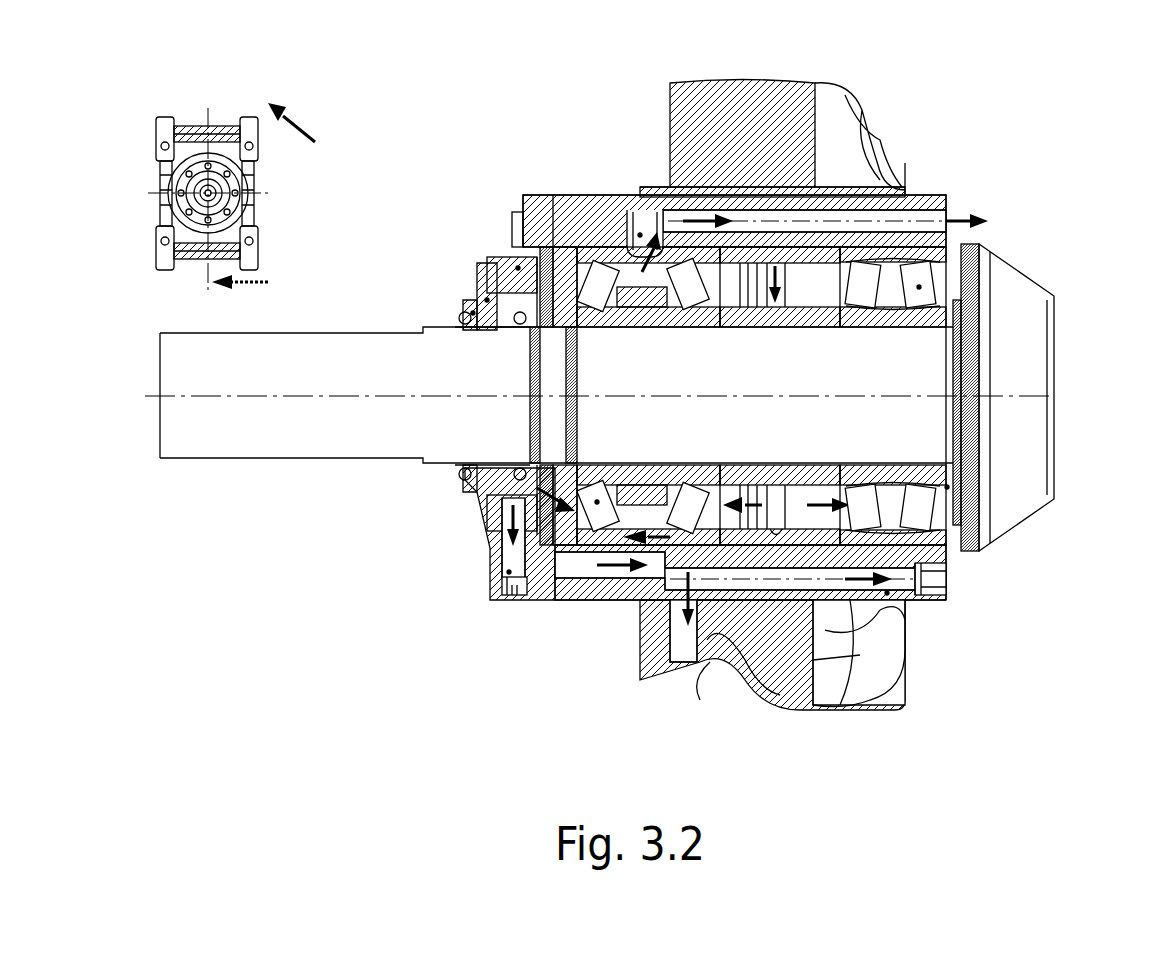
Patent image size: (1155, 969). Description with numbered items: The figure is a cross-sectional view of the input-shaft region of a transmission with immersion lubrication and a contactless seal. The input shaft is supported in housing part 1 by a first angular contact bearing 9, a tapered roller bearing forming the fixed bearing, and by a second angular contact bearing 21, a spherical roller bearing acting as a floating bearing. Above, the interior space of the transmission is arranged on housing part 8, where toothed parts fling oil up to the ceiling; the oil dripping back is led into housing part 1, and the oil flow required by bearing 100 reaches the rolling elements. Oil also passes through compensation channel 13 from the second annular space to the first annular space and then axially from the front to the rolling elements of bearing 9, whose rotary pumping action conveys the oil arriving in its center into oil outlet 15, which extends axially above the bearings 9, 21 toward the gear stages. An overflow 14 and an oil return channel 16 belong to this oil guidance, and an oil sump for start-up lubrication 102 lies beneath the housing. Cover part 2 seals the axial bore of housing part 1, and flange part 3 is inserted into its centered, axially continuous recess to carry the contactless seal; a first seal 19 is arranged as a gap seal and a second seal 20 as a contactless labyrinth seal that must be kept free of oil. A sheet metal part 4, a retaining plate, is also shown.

The housing part 1 is at (810, 197).
The cover part 2 is at (518, 268).
The flange part 3 is at (473, 313).
The sheet metal part 4 is at (946, 529).
The housing part 8 is at (787, 133).
The bearing 9 is at (543, 596).
The compensation channel 13 is at (597, 502).
The overflow 14 is at (947, 487).
The oil outlet 15 is at (740, 213).
The oil return channel 16 is at (500, 598).
The first seal 19 is at (487, 300).
The second seal 20 is at (482, 312).
The bearing 21 is at (919, 287).
The oil flow required by bearing 100 is at (640, 235).
The oil sump for start-up lubrication 102 is at (887, 593).